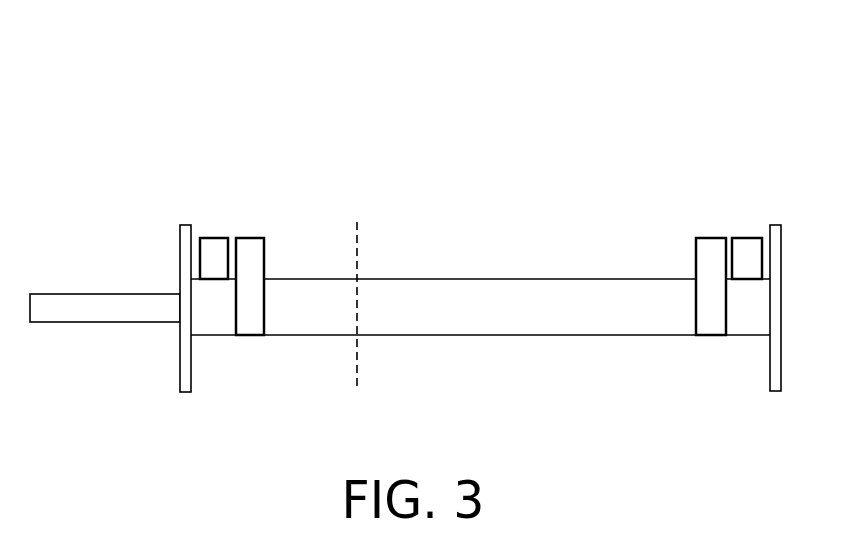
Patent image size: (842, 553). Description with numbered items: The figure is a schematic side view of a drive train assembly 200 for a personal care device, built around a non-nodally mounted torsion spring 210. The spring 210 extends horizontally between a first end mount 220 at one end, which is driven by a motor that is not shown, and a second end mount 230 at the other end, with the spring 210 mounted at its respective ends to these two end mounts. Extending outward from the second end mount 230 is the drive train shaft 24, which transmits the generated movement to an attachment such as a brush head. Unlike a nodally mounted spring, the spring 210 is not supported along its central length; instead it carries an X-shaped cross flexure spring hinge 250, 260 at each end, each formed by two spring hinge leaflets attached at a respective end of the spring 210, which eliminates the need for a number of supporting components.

The drive train assembly 200 is at (127, 110).
The drive train shaft 24 is at (97, 292).
The torsion spring 210 is at (592, 280).
The first end mount 220 is at (776, 222).
The second end mount 230 is at (185, 222).
The cross flexure spring hinge 250 is at (231, 237).
The cross flexure spring hinge 260 is at (730, 237).